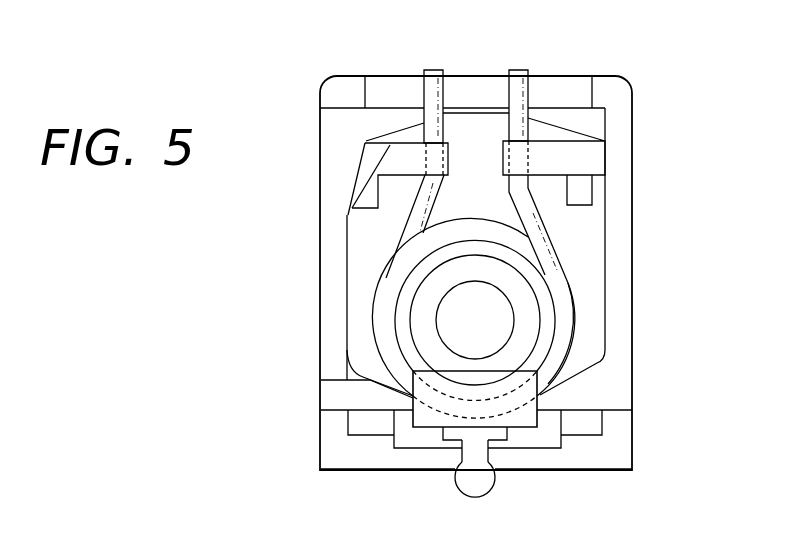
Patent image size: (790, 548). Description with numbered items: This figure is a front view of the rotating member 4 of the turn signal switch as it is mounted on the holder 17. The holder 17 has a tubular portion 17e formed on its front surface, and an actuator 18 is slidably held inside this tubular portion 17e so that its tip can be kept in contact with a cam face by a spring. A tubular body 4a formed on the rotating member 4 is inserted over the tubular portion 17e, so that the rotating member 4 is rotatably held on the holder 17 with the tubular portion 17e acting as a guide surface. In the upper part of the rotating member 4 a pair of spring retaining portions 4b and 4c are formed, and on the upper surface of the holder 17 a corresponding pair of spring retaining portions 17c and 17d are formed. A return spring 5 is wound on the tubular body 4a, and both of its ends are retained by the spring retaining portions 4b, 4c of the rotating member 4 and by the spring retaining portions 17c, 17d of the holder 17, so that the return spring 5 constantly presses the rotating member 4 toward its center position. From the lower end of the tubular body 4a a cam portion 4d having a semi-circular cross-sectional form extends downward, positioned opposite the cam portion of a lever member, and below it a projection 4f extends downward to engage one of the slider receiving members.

The rotating member 4 is at (348, 244).
The tubular body 4a is at (547, 350).
The spring retaining portion 4b is at (450, 157).
The spring retaining portion 4c is at (503, 157).
The cam portion 4d is at (528, 424).
The projection 4f is at (464, 488).
The return spring 5 is at (564, 285).
The holder 17 is at (621, 134).
The spring retaining portion 17c is at (395, 81).
The spring retaining portion 17d is at (537, 85).
The tubular portion 17e is at (535, 320).
The actuator 18 is at (437, 320).